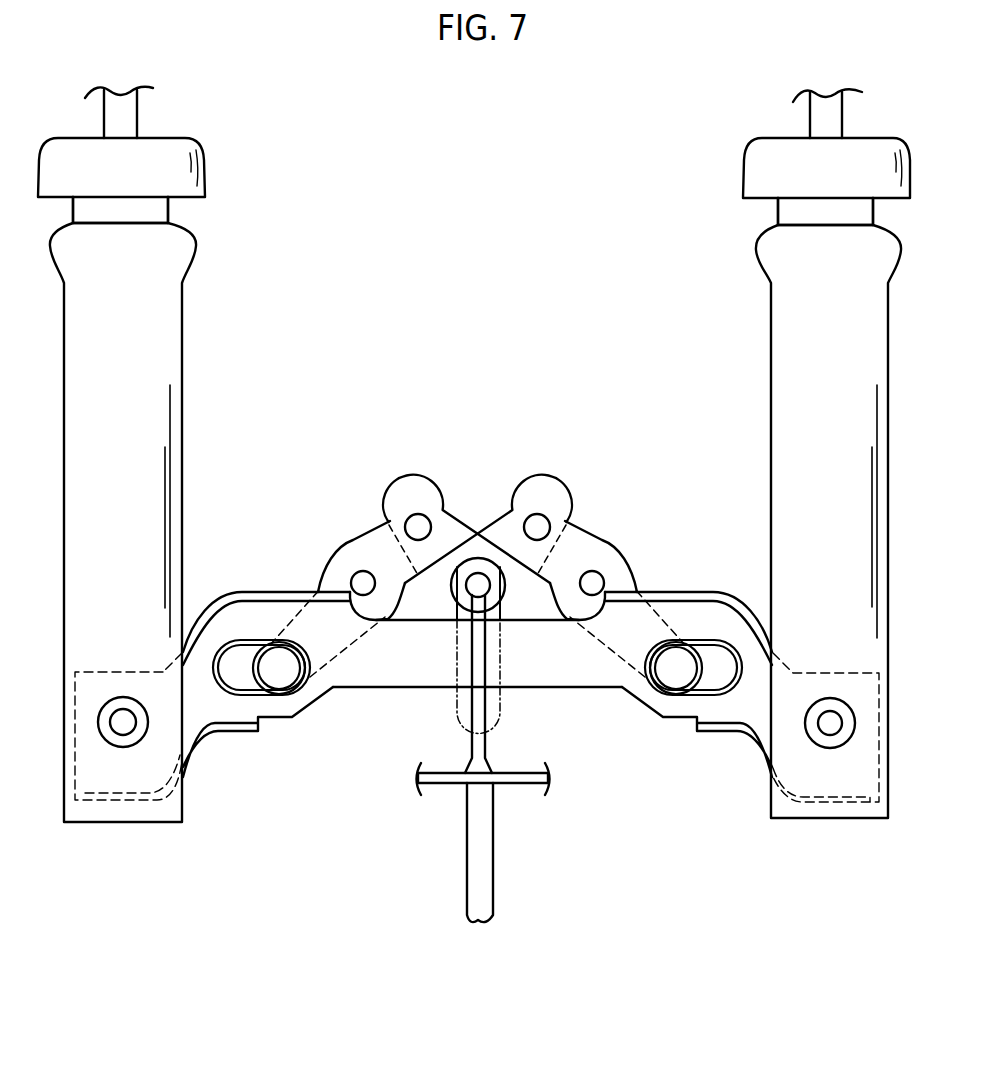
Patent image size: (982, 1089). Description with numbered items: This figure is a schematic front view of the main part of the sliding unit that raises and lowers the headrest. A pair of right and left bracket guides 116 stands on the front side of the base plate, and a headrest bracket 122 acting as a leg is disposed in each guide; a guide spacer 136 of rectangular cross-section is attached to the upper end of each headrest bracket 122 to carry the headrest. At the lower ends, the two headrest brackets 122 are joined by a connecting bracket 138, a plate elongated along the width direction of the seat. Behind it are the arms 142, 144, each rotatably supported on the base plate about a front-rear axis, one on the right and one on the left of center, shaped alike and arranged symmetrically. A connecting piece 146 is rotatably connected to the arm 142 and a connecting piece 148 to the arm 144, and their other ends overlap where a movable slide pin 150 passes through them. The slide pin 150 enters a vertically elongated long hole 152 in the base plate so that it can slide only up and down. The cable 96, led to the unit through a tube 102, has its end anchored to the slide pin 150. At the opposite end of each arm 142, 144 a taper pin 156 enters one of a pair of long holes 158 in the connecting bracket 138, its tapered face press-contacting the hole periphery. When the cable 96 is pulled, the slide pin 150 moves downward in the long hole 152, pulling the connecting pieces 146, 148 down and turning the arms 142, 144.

The cable 96 is at (482, 738).
The tube 102 is at (482, 855).
The bracket guide 116 is at (193, 353).
The headrest bracket 122 is at (157, 205).
The guide spacer 136 is at (200, 155).
The connecting bracket 138 is at (578, 685).
The arm 142 is at (370, 545).
The arm 144 is at (588, 542).
The connecting piece 146 is at (453, 513).
The connecting piece 148 is at (498, 517).
The slide pin 150 is at (473, 583).
The long hole 152 is at (492, 645).
The taper pin 156 is at (287, 668).
The long hole 158 is at (243, 656).